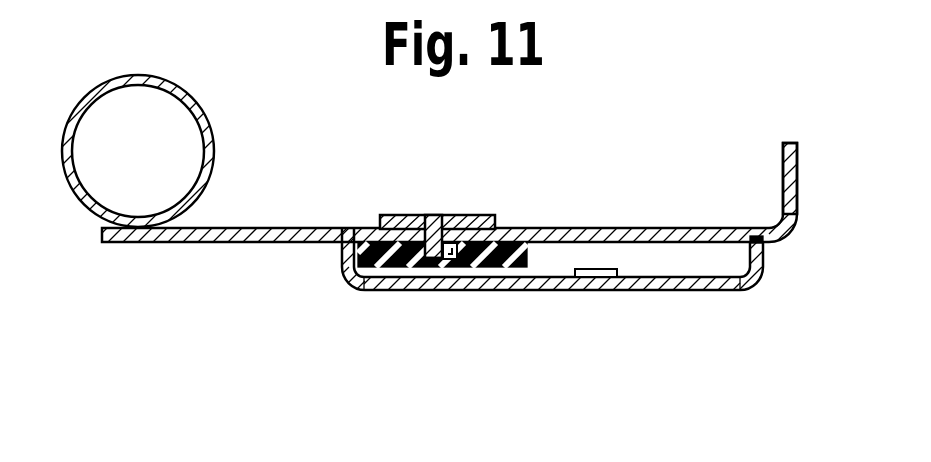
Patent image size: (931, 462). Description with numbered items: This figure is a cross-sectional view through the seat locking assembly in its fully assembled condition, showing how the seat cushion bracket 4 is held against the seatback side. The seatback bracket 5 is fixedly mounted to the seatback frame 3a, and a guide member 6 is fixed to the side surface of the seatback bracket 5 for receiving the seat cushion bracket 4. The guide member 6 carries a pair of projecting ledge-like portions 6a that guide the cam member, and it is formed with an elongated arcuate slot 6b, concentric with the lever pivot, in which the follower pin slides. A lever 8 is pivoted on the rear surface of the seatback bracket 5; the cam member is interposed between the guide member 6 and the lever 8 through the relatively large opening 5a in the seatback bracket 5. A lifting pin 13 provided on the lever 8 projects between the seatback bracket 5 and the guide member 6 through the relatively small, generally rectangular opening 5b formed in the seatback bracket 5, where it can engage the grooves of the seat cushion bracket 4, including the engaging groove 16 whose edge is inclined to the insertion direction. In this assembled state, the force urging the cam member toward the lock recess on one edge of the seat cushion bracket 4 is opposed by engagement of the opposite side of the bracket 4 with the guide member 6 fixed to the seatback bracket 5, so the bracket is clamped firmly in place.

The seatback frame 3a is at (200, 123).
The seat cushion bracket 4 is at (375, 291).
The seatback bracket 5 is at (545, 237).
The opening 5a is at (630, 233).
The opening 5b is at (410, 230).
The guide member 6 is at (550, 290).
The projecting ledge-like portions 6a is at (593, 277).
The arcuate slot 6b is at (633, 290).
The lever 8 is at (467, 215).
The lifting pin 13 is at (430, 258).
The engaging groove 16 is at (448, 256).